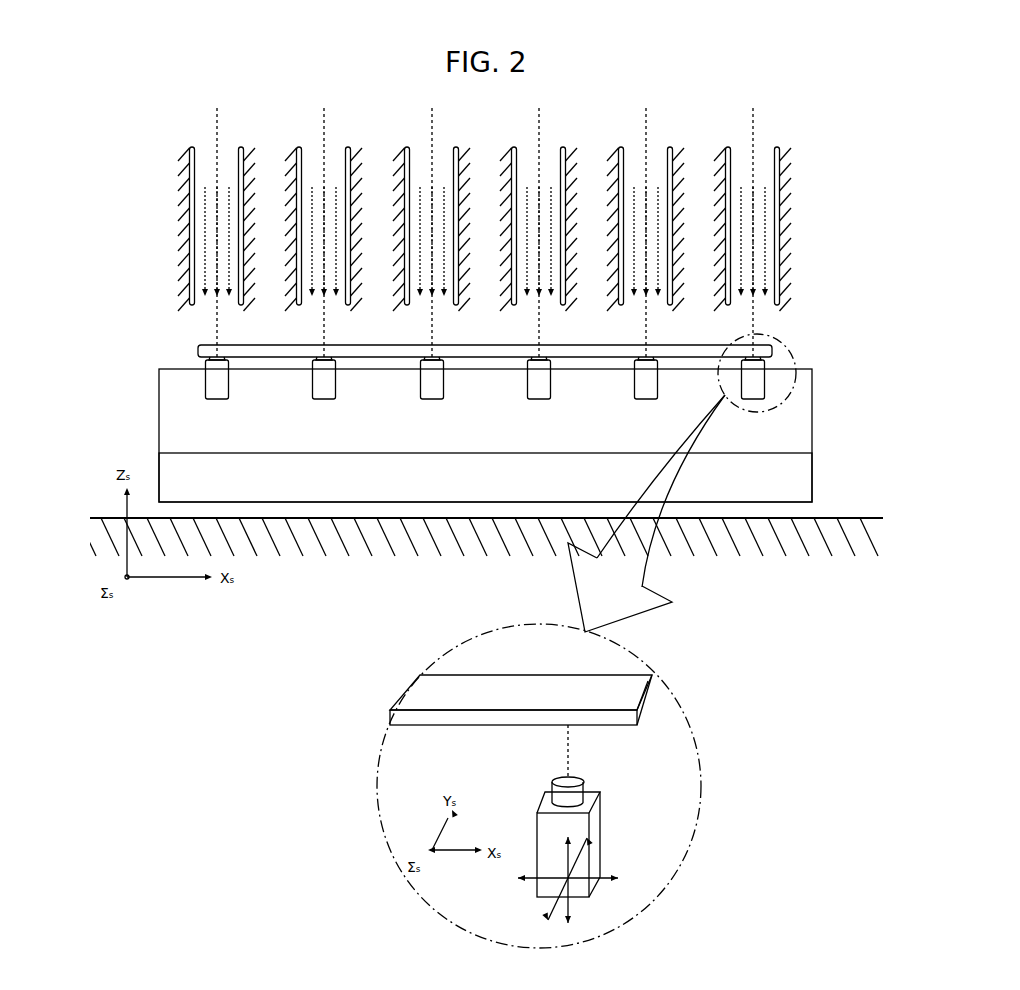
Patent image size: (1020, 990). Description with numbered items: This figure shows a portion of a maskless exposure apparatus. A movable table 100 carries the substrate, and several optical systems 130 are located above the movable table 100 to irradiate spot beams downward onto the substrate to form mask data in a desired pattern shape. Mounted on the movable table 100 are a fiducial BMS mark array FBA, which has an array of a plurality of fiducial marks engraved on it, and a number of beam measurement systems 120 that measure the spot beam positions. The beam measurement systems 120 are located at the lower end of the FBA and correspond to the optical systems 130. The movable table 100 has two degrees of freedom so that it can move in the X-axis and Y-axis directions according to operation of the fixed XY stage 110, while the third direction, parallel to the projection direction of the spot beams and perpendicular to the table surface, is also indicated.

The movable table 100 is at (804, 412).
The fixed XY stage 110 is at (804, 475).
The beam measurement system 120 is at (208, 388).
The optical system 130 is at (190, 208).
The fiducial BMS mark array FBA is at (770, 348).